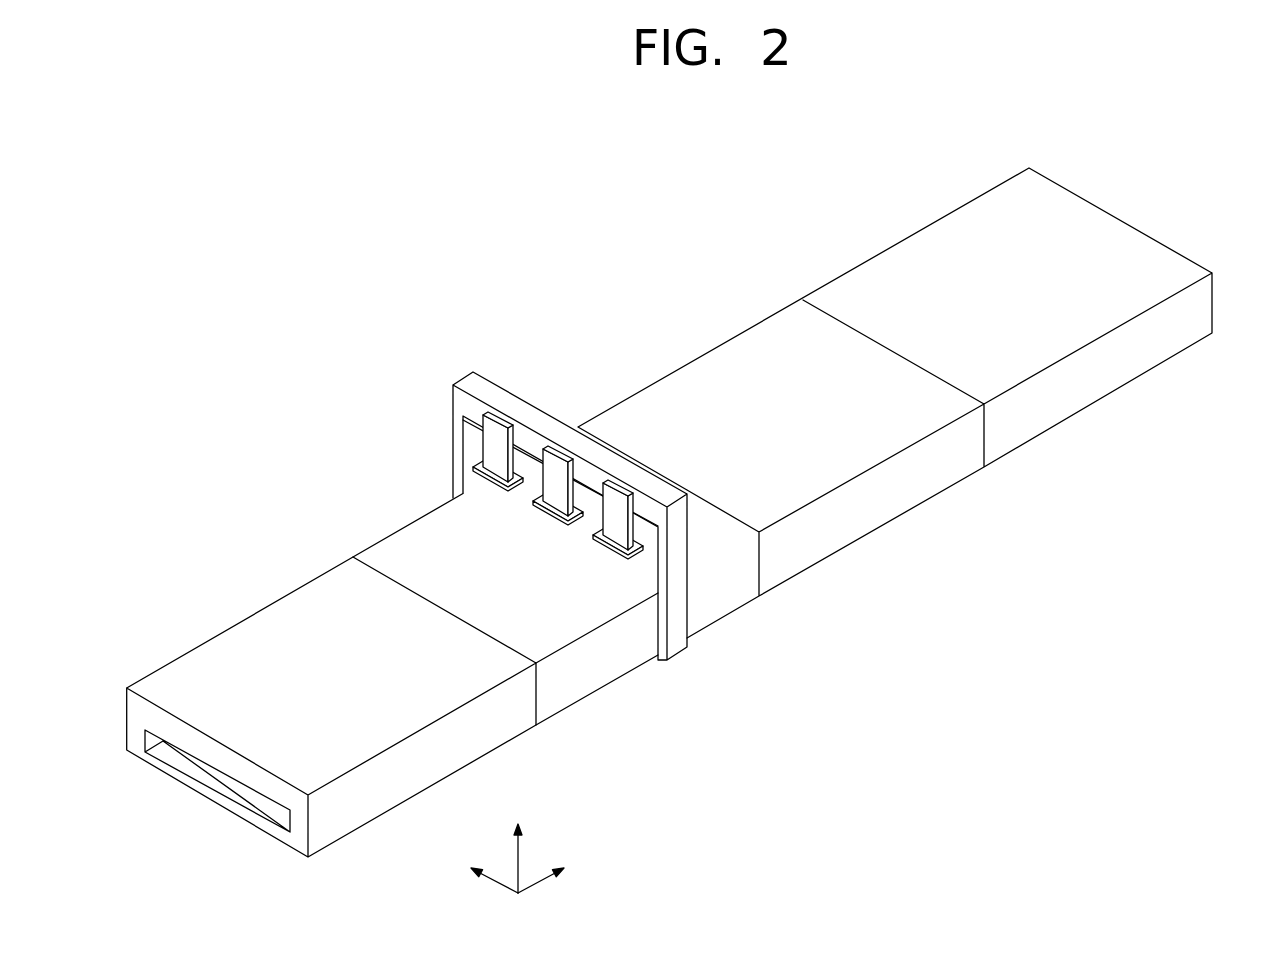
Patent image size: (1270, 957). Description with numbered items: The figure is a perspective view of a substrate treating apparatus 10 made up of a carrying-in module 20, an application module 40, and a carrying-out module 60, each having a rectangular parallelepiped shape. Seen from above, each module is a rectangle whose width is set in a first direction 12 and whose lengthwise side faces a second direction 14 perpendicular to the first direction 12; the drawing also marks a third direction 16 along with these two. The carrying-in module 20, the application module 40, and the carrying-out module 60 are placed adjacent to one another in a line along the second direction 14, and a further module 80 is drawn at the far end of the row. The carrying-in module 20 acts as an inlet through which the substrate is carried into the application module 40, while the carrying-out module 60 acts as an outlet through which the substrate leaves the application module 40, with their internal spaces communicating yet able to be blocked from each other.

The substrate treating apparatus 10 is at (669, 505).
The first direction 12 is at (469, 874).
The second direction 14 is at (566, 874).
The third direction 16 is at (516, 845).
The carrying-in module 20 is at (234, 568).
The application module 40 is at (416, 492).
The carrying-out module 60 is at (678, 352).
The second connector body 80 is at (1048, 440).